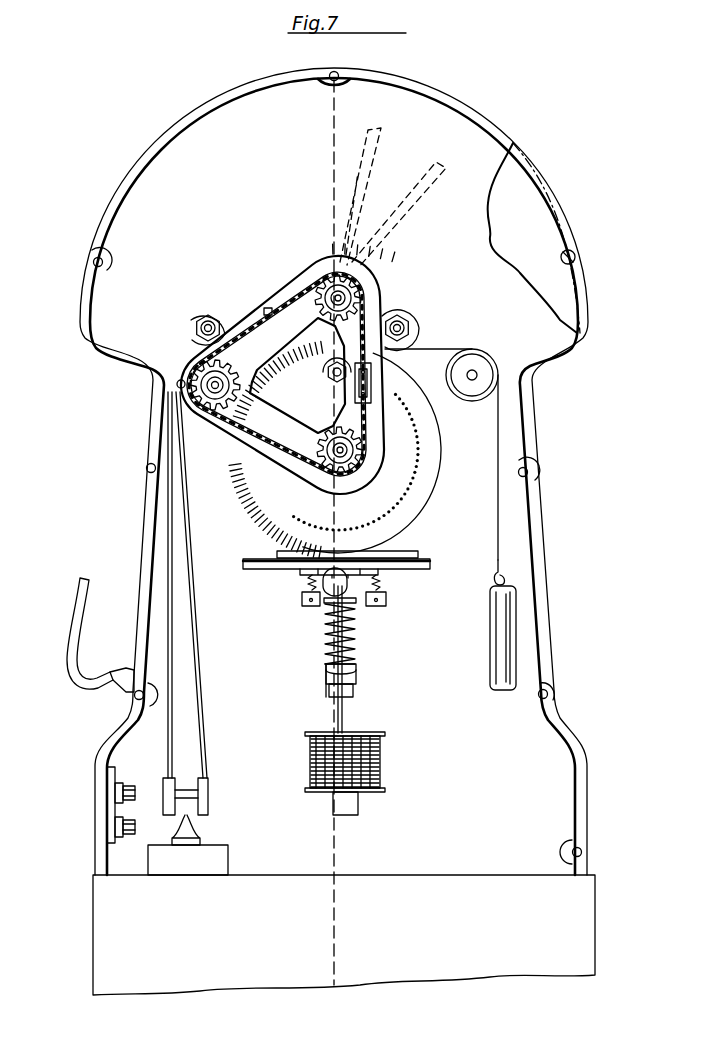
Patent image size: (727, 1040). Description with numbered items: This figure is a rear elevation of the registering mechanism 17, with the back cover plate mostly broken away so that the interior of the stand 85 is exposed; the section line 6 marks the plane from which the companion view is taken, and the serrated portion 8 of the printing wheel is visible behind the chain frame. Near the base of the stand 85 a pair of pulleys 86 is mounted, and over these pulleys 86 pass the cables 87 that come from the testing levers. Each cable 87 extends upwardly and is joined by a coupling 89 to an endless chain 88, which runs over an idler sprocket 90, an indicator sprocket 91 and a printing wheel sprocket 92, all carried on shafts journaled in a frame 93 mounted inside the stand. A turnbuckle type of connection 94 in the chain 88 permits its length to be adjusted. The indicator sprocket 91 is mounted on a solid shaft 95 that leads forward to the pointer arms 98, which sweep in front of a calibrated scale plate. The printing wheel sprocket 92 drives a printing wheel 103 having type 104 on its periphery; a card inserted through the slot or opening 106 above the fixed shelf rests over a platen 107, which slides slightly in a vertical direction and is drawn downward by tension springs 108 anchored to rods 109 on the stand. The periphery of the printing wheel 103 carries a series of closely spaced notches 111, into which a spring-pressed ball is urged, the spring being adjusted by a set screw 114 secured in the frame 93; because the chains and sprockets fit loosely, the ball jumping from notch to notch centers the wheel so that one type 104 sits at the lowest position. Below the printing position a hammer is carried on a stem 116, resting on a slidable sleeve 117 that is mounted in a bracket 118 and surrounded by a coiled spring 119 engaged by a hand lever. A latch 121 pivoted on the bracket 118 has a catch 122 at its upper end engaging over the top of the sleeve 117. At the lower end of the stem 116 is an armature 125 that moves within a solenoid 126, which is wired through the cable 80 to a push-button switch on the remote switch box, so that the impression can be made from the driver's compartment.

The section line 6 is at (334, 59).
The dial gear teeth 8 is at (380, 372).
The registering mechanism 17 is at (133, 509).
The cable 80 is at (78, 605).
The stand 85 is at (512, 555).
The pulleys 86 is at (185, 795).
The cables 87 is at (172, 740).
The endless chain 88 is at (297, 303).
The couplings 89 is at (268, 308).
The idler sprocket 90 is at (218, 392).
The indicator sprocket 91 is at (355, 284).
The printing wheel sprocket 92 is at (348, 462).
The frame 93 is at (268, 455).
The turnbuckle type of connection 94 is at (372, 388).
The solid shaft 95 is at (345, 298).
The pointer arms 98 is at (362, 178).
The printing wheel 103 is at (428, 478).
The type 104 is at (323, 547).
The slot or opening 106 is at (416, 556).
The platen 107 is at (330, 586).
The tension springs 108 is at (300, 597).
The rods 109 is at (388, 598).
The notches 111 is at (418, 440).
The set screw 114 is at (330, 380).
The stem 116 is at (342, 720).
The slidable sleeve 117 is at (355, 646).
The bracket 118 is at (357, 685).
The coiled spring 119 is at (356, 626).
The latch 121 is at (326, 682).
The catch 122 is at (334, 578).
The armature 125 is at (353, 805).
The solenoid 126 is at (370, 766).